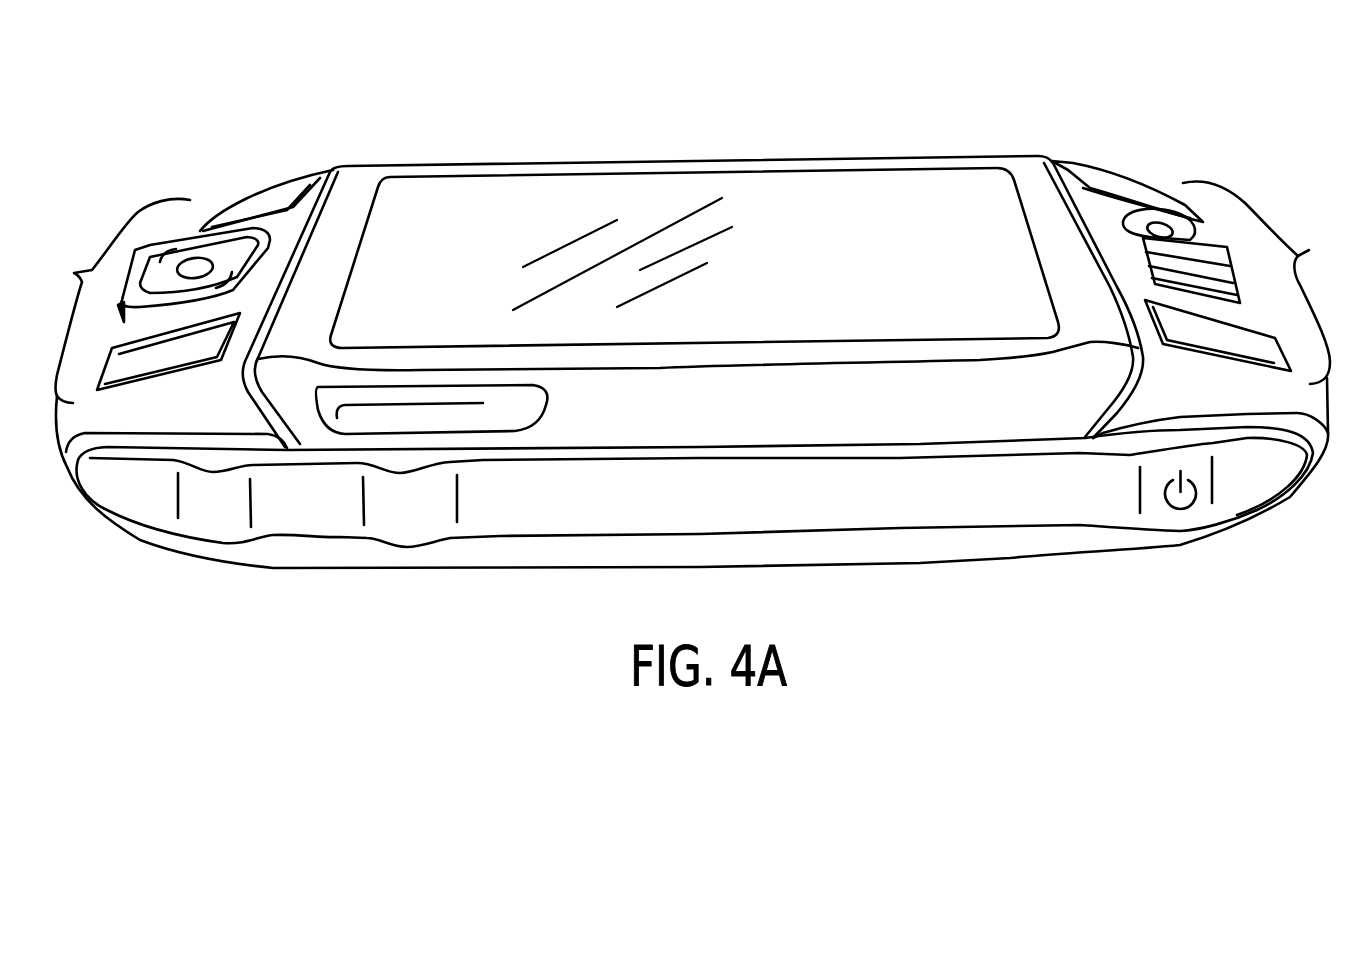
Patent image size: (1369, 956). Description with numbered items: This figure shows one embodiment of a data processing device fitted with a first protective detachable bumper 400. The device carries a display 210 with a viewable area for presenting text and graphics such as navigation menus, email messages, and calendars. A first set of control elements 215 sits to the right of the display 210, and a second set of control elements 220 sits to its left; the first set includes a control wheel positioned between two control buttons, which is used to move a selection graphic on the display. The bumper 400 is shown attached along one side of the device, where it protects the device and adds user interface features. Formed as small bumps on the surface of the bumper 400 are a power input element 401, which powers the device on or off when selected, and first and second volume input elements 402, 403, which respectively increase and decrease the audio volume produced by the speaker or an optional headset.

The display 210 is at (747, 157).
The first set of control elements 215 is at (1300, 256).
The second set of control elements 220 is at (78, 275).
The first bumper 400 is at (993, 503).
The power input element 401 is at (1193, 509).
The first volume input element 402 is at (222, 517).
The second volume input element 403 is at (407, 513).